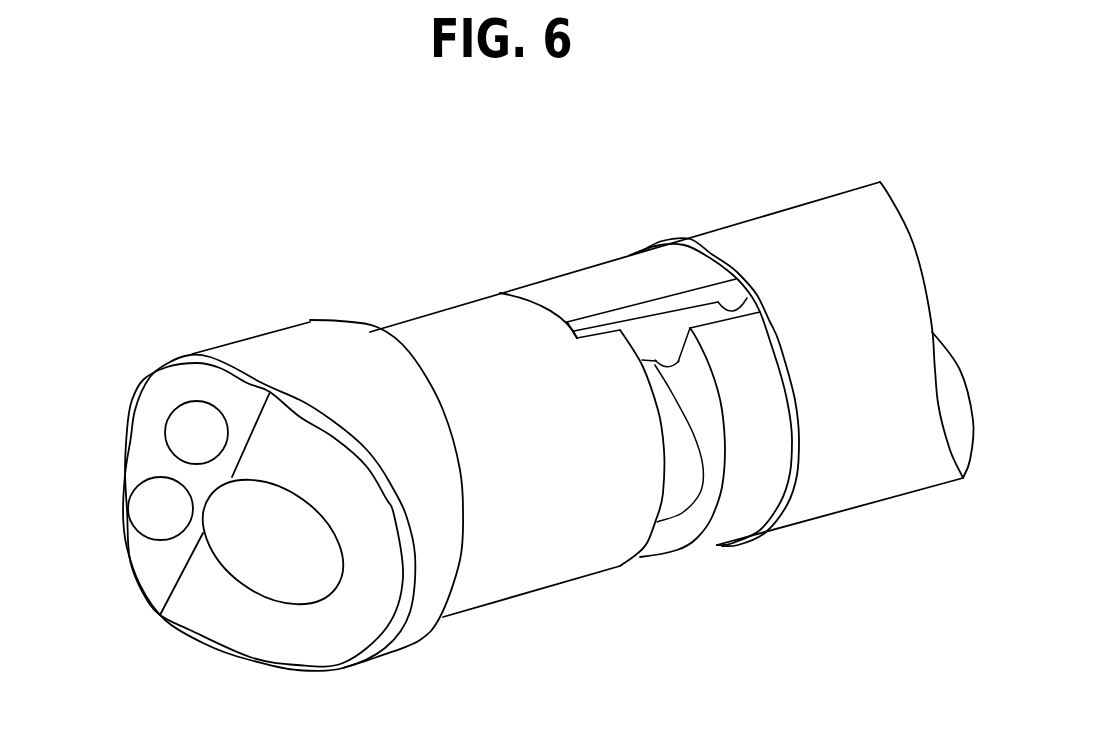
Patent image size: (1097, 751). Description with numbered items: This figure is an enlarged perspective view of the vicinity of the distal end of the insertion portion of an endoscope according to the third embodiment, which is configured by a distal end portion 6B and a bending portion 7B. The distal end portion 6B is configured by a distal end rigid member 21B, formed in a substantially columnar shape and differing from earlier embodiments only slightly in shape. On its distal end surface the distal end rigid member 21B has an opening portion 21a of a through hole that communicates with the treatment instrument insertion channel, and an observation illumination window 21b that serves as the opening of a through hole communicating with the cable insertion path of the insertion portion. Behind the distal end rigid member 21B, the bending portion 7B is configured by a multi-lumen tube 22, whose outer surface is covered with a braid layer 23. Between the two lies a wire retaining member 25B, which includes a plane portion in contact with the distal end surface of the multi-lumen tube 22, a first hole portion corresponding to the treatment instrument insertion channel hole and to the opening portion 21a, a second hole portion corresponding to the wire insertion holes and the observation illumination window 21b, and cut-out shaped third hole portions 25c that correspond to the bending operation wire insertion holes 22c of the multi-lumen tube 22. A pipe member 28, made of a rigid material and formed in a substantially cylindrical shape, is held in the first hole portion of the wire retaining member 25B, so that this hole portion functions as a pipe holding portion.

The distal end rigid member 21B is at (522, 542).
The opening portion 21a is at (307, 568).
The observation illumination window 21b is at (158, 507).
The bending operation wire insertion hole 22c is at (734, 305).
The third hole portion 25c is at (748, 290).
The pipe member 28 is at (683, 467).
The wire retaining member 25B is at (750, 487).
The multi-lumen tube 22 is at (909, 379).
The braid layer 23 is at (845, 450).
The distal end portion 6B is at (478, 237).
The bending portion 7B is at (833, 131).